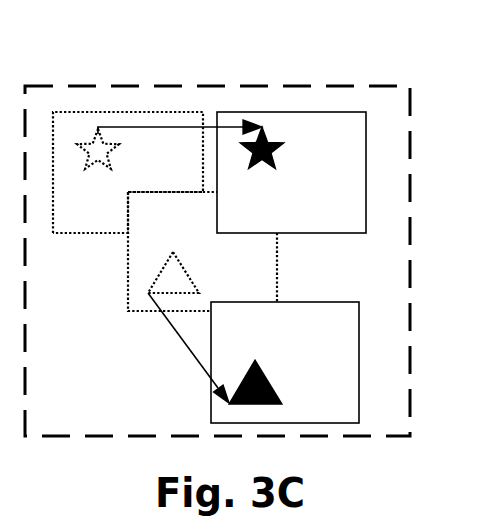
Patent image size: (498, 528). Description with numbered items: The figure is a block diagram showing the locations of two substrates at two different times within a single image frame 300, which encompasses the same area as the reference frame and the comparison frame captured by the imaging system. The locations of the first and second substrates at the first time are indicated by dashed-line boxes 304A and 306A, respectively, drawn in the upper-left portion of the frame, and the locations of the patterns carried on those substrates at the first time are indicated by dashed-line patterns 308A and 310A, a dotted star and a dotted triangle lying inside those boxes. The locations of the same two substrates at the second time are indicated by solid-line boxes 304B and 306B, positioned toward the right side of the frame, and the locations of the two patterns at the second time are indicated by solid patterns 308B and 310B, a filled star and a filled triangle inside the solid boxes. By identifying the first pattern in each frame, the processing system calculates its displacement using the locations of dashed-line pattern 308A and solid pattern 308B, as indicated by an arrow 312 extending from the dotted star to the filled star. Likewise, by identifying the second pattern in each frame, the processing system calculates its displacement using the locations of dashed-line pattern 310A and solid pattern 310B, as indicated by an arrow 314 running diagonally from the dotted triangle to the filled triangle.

The image frame 300 is at (333, 437).
The dashed-line box 304A is at (83, 233).
The solid-line box 304B is at (329, 233).
The dashed-line box 306A is at (128, 287).
The solid-line box 306B is at (315, 302).
The dashed-line pattern 308A is at (94, 144).
The solid pattern 308B is at (275, 160).
The dashed-line pattern 310A is at (172, 278).
The solid pattern 310B is at (268, 382).
The arrow 312 is at (163, 128).
The arrow 314 is at (173, 333).